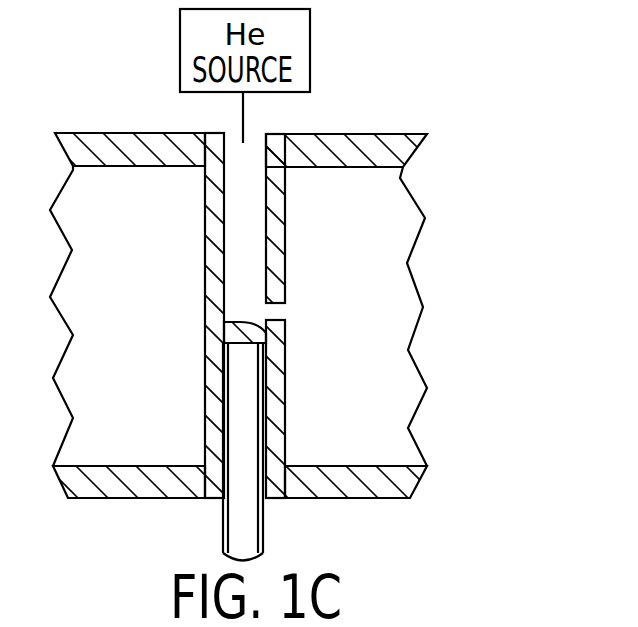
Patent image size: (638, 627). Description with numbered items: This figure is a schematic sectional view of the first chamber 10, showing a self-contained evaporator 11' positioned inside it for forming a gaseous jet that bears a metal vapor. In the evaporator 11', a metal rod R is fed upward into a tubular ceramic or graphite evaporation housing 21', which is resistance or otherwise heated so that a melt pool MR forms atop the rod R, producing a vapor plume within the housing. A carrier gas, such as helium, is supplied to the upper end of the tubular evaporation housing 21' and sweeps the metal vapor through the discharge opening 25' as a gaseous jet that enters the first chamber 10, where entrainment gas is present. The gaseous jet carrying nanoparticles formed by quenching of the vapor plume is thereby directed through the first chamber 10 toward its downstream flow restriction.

The first chamber 10 is at (398, 297).
The evaporation housing 21' is at (319, 313).
The discharge opening 25' is at (319, 313).
The evaporator 11' is at (319, 313).
The melt pool MR is at (236, 322).
The metal rod R is at (245, 515).